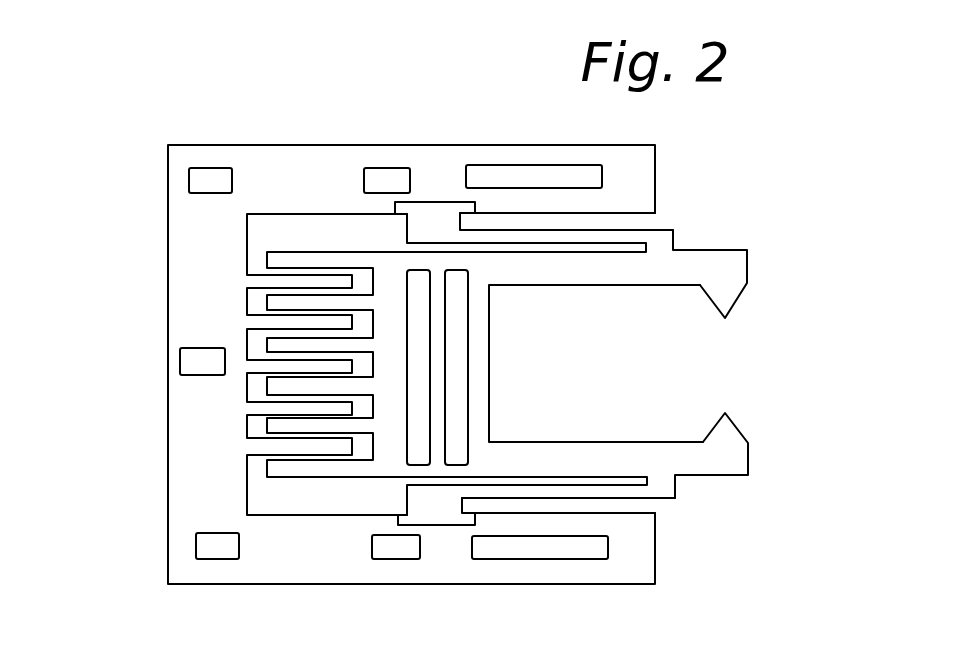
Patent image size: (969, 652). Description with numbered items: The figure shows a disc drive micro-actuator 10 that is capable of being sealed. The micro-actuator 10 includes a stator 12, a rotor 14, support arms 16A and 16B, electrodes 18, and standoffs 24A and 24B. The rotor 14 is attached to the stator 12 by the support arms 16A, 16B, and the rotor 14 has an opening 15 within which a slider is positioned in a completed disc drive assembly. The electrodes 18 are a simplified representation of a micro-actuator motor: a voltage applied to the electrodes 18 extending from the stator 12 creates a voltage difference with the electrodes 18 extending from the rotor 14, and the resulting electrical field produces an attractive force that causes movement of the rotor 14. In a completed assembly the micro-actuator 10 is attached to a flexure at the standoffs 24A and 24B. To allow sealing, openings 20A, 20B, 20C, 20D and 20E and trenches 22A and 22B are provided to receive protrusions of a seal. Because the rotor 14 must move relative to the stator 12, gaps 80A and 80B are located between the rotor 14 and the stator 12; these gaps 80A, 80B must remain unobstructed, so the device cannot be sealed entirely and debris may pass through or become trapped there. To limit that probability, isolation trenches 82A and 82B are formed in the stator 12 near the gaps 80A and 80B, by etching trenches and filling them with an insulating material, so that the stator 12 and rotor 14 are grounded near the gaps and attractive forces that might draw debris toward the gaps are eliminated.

The micro-actuator 10 is at (117, 55).
The stator 12 is at (195, 237).
The rotor 14 is at (690, 265).
The opening 15 is at (686, 359).
The support arm 16A is at (637, 233).
The support arm 16B is at (657, 493).
The electrodes 18 is at (306, 490).
The opening 20A is at (387, 173).
The opening 20B is at (210, 173).
The opening 20C is at (193, 362).
The opening 20D is at (208, 545).
The opening 20E is at (398, 552).
The trench 22A is at (417, 357).
The trench 22B is at (457, 387).
The standoff 24A is at (603, 173).
The standoff 24B is at (607, 559).
The gap 80A is at (400, 236).
The gap 80B is at (394, 490).
The isolation trench 82A is at (438, 203).
The isolation trench 82B is at (443, 525).